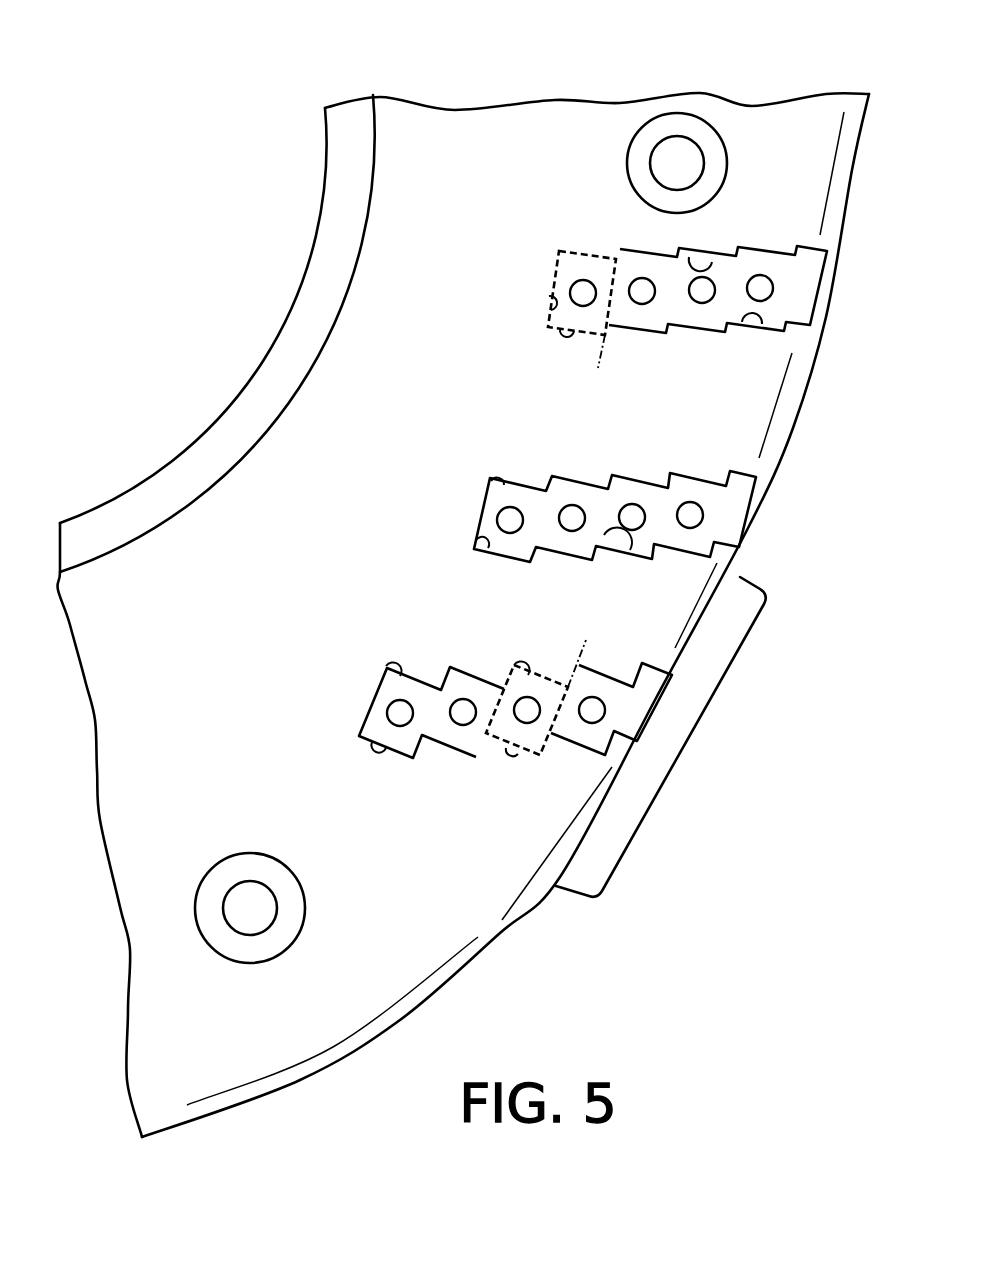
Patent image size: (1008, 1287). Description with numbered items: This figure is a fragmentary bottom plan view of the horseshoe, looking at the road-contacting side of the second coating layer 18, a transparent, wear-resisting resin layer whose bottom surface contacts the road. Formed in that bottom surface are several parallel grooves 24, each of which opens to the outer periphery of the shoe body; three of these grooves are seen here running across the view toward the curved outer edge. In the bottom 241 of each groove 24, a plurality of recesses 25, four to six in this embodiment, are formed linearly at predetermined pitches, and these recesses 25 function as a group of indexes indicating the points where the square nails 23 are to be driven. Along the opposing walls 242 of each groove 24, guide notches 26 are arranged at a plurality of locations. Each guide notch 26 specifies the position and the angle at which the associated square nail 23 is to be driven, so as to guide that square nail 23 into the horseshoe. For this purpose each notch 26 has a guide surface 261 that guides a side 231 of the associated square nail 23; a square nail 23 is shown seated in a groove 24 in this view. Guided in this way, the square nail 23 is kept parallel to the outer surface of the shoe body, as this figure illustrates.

The second coating layer 18 is at (455, 106).
The square nail 23 is at (596, 252).
The groove 24 is at (803, 288).
The recess 25 is at (557, 283).
The guide notch 26 is at (483, 540).
The side 231 is at (603, 352).
The bottom 241 is at (668, 295).
The opposing walls 242 is at (717, 263).
The guide surface 261 is at (546, 326).